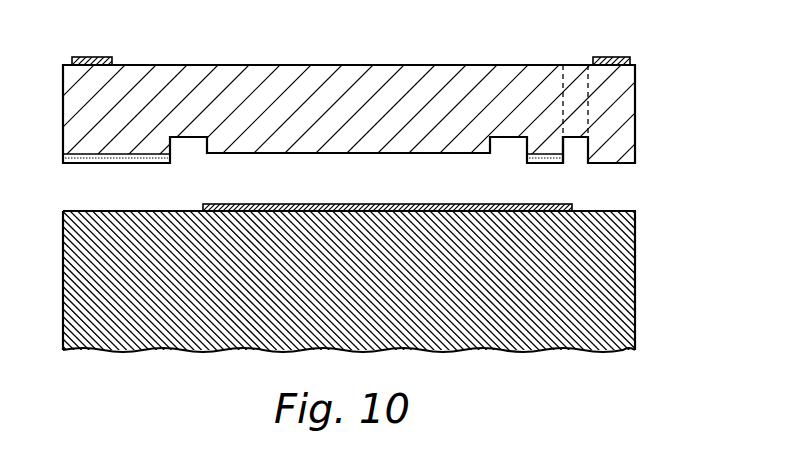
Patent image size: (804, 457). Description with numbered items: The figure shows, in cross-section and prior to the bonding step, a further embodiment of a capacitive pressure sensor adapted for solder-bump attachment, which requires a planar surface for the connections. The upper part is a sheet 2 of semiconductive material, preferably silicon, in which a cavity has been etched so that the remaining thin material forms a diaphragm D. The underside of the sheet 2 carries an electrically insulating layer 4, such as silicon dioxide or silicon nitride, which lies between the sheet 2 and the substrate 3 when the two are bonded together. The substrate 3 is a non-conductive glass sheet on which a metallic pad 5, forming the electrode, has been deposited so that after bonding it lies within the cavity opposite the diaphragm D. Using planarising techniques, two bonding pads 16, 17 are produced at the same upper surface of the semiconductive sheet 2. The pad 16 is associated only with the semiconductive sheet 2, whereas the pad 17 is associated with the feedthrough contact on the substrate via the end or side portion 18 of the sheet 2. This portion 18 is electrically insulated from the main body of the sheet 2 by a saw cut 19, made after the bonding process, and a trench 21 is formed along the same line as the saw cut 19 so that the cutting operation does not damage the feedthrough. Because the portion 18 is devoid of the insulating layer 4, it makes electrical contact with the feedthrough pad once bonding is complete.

The sheet of semiconductive material 2 is at (405, 80).
The substrate 3 is at (615, 310).
The electrically insulating layer 4 is at (75, 165).
The metallic pad 5 is at (205, 207).
The bonding pad 16 is at (100, 56).
The bonding pad 17 is at (612, 60).
The end or side portion of the semiconductive layer 18 is at (624, 95).
The saw cut 19 is at (565, 97).
The trench 21 is at (585, 150).
The diaphragm D is at (260, 136).